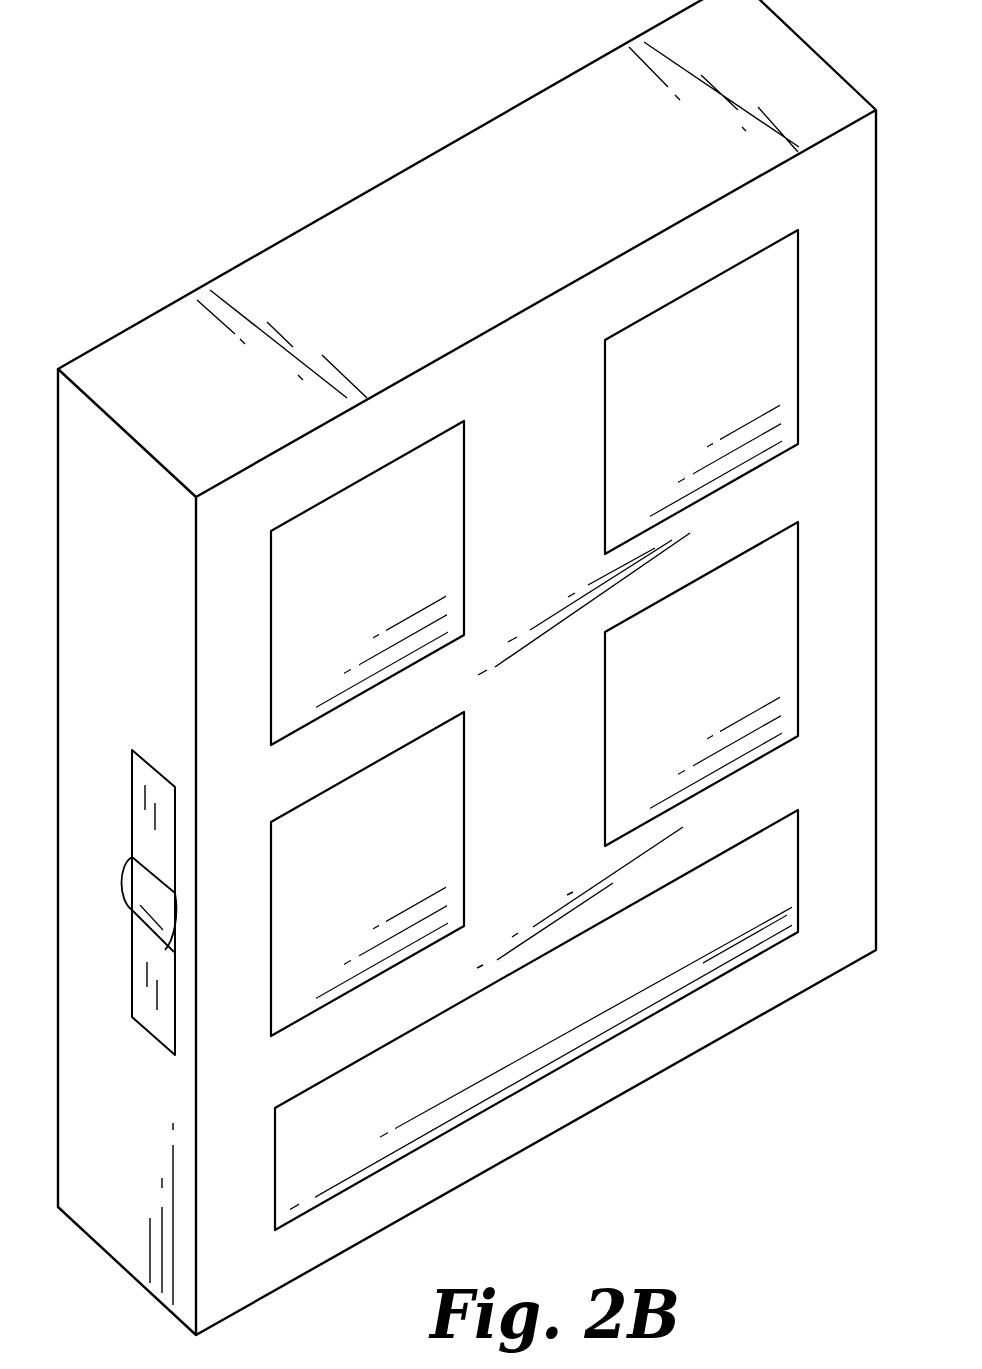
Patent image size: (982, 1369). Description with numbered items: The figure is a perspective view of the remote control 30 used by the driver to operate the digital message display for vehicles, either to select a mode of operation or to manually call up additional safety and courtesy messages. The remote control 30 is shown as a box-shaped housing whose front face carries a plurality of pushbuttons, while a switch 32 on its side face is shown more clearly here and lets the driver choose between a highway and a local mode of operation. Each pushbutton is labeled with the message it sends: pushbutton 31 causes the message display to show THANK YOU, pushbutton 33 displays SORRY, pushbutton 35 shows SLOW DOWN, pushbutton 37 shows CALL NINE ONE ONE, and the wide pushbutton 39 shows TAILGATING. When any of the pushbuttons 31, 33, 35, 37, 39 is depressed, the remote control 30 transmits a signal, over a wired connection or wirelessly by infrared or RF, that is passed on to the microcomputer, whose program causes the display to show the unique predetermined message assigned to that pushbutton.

The remote control 30 is at (192, 95).
The pushbutton 31 is at (466, 425).
The switch 32 is at (135, 750).
The pushbutton 33 is at (800, 243).
The pushbutton 35 is at (466, 736).
The pushbutton 37 is at (798, 537).
The pushbutton 39 is at (798, 826).